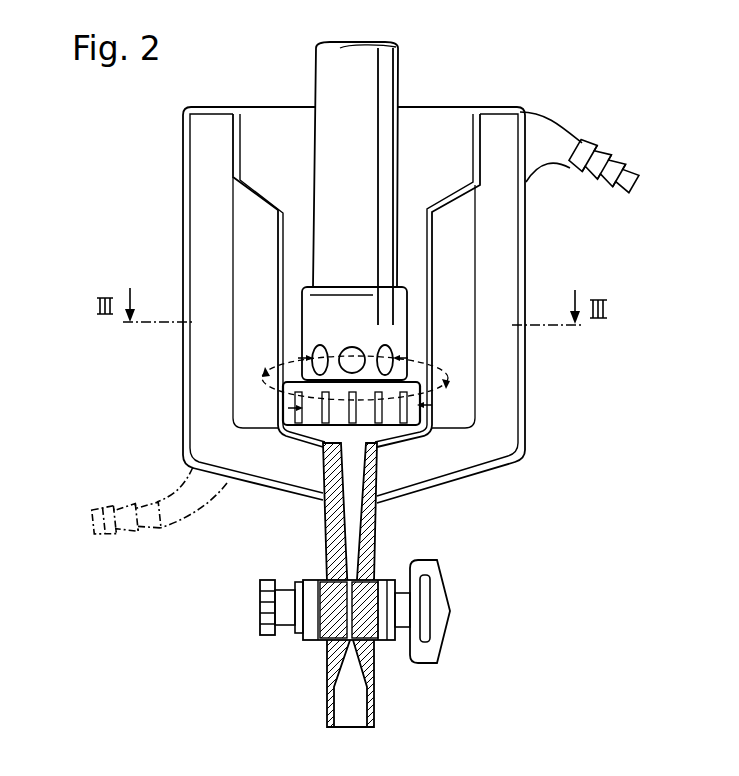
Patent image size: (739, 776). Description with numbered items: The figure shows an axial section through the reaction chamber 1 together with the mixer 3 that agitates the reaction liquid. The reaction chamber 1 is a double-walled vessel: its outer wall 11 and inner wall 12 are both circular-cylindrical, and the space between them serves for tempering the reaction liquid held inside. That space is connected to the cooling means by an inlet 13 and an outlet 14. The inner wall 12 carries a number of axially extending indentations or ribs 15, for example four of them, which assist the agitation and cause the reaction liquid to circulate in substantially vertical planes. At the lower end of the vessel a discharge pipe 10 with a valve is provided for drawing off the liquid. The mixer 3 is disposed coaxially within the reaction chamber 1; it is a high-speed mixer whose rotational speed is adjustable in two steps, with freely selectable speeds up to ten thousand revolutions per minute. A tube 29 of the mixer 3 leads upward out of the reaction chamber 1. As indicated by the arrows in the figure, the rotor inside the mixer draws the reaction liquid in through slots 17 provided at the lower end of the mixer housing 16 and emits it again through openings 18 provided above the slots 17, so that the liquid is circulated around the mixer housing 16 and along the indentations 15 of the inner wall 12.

The reaction chamber 1 is at (360, 280).
The mixer 3 is at (394, 183).
The discharge pipe 10 is at (328, 668).
The outer wall 11 is at (183, 160).
The inner wall 12 is at (240, 127).
The inlet 13 is at (133, 533).
The outlet 14 is at (590, 150).
The indentations 15 is at (262, 285).
The mixer housing 16 is at (410, 302).
The slots 17 is at (327, 427).
The openings 18 is at (383, 352).
The tube 29 is at (398, 63).